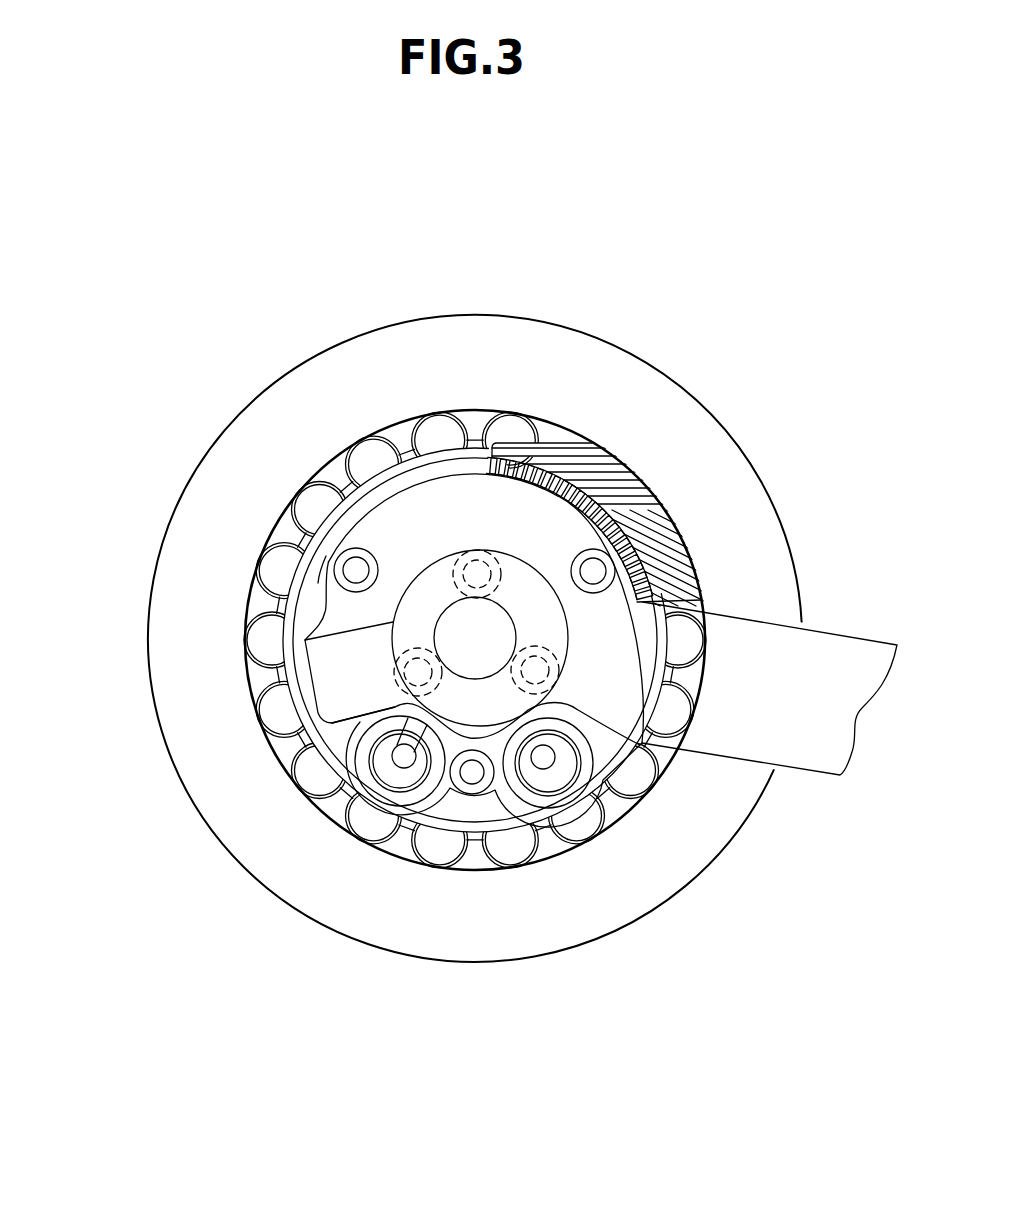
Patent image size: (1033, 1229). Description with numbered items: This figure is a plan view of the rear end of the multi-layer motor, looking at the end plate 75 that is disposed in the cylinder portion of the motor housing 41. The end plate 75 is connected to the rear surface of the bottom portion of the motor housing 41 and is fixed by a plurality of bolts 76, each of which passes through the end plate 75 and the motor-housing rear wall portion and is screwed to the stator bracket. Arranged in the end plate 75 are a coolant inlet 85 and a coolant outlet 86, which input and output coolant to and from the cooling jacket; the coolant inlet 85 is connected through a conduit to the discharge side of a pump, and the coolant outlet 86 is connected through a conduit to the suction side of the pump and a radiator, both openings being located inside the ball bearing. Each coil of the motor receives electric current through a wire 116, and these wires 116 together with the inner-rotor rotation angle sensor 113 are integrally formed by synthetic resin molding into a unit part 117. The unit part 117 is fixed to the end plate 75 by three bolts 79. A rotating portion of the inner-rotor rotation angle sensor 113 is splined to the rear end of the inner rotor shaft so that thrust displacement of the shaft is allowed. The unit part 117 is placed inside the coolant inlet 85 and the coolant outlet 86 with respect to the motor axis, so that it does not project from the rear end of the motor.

The motor housing 41 is at (287, 378).
The end plate 75 is at (323, 513).
The bolts 76 is at (470, 556).
The bolts 79 is at (337, 560).
The coolant inlet 85 is at (390, 777).
The coolant outlet 86 is at (557, 783).
The inner-rotor rotation angle sensor 113 is at (311, 645).
The wire 116 is at (560, 445).
The unit part 117 is at (318, 583).